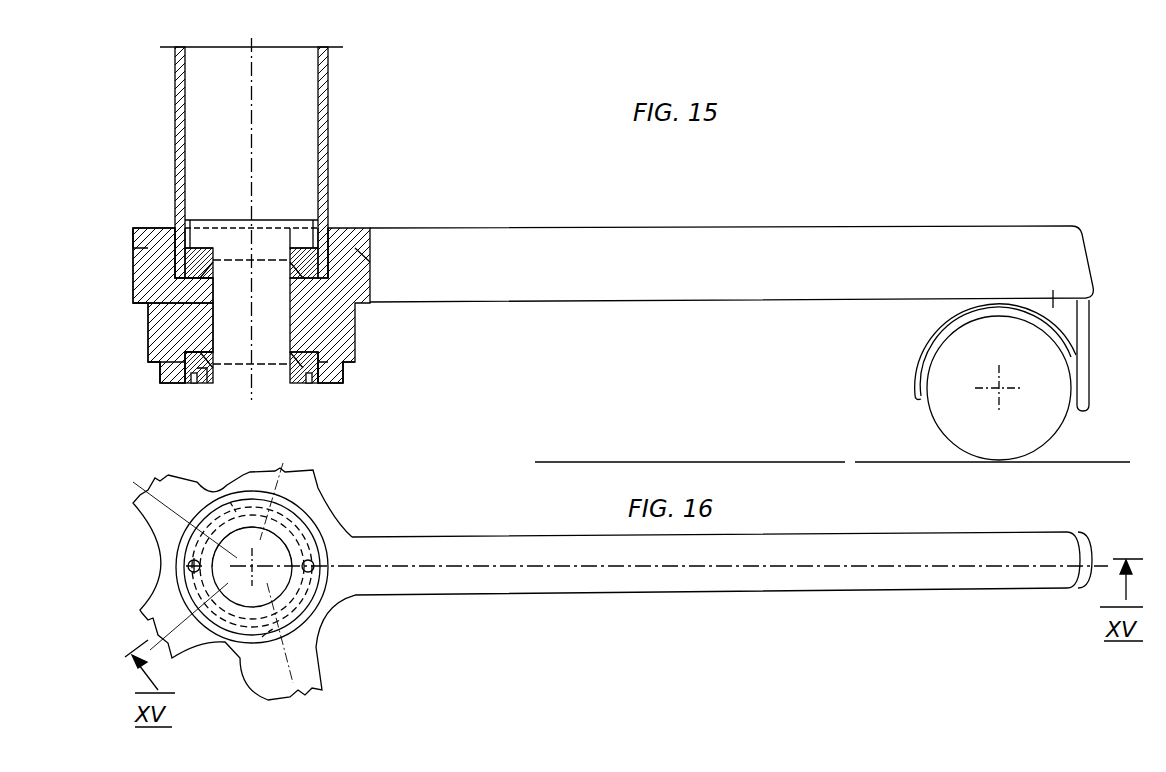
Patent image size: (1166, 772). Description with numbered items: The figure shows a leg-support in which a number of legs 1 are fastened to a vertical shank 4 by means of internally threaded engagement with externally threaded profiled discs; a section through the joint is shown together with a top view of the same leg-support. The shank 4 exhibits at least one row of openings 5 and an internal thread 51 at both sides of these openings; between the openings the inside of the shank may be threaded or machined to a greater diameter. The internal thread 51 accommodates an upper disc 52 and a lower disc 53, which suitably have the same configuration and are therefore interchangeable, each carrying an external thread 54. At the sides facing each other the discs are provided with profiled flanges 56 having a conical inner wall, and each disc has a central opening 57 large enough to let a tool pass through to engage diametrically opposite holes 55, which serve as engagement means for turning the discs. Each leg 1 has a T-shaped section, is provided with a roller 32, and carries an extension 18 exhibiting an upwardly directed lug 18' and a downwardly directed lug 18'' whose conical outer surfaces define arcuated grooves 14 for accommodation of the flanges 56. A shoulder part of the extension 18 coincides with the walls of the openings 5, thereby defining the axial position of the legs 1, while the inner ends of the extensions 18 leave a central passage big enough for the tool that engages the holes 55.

In FIG. 15, the leg 1 is at (743, 243).
In FIG. 16, the leg 1 is at (813, 545).
In FIG. 15, the shank 4 is at (328, 80).
In FIG. 16, the shank 4 is at (307, 505).
In FIG. 15, the opening 5 is at (147, 353).
In FIG. 16, the opening 5 is at (287, 487).
In FIG. 15, the arcuated groove 14 is at (140, 252).
In FIG. 16, the arcuated groove 14 is at (262, 637).
In FIG. 15, the extension 18 is at (276, 305).
In FIG. 16, the extension 18 is at (211, 567).
In FIG. 15, the upwardly directed lug 18' is at (137, 265).
In FIG. 15, the downwardly directed lug 18'' is at (141, 332).
In FIG. 15, the roller 32 is at (955, 405).
In FIG. 15, the internal thread 51 is at (300, 243).
In FIG. 15, the upper disc 52 is at (297, 243).
In FIG. 16, the upper disc 52 is at (313, 530).
In FIG. 15, the lower disc 53 is at (207, 382).
In FIG. 15, the external thread 54 is at (350, 243).
In FIG. 15, the hole 55 is at (197, 247).
In FIG. 16, the hole 55 is at (312, 568).
In FIG. 15, the profiled flange 56 is at (367, 262).
In FIG. 16, the profiled flange 56 is at (228, 505).
In FIG. 15, the central opening 57 is at (190, 250).
In FIG. 16, the central opening 57 is at (268, 587).